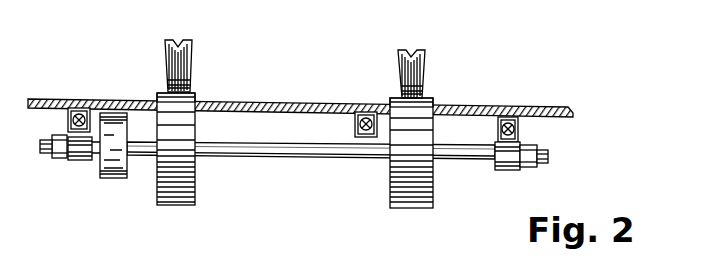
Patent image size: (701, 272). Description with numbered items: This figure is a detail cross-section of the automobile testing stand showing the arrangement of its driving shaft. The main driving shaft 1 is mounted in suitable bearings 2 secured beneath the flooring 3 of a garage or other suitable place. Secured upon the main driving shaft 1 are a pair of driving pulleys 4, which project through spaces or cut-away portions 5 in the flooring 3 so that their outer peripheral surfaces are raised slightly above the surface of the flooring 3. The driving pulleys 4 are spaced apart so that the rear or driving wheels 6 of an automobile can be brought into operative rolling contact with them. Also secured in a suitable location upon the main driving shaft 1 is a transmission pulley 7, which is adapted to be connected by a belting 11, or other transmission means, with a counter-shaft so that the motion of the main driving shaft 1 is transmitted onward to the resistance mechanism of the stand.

The main driving shaft 1 is at (292, 158).
The bearings 2 is at (75, 163).
The flooring 3 is at (284, 101).
The driving pulleys 4 is at (183, 200).
The cut-away portions 5 is at (198, 100).
The driving wheels 6 is at (195, 45).
The transmission pulley 7 is at (102, 166).
The belting 11 is at (118, 182).